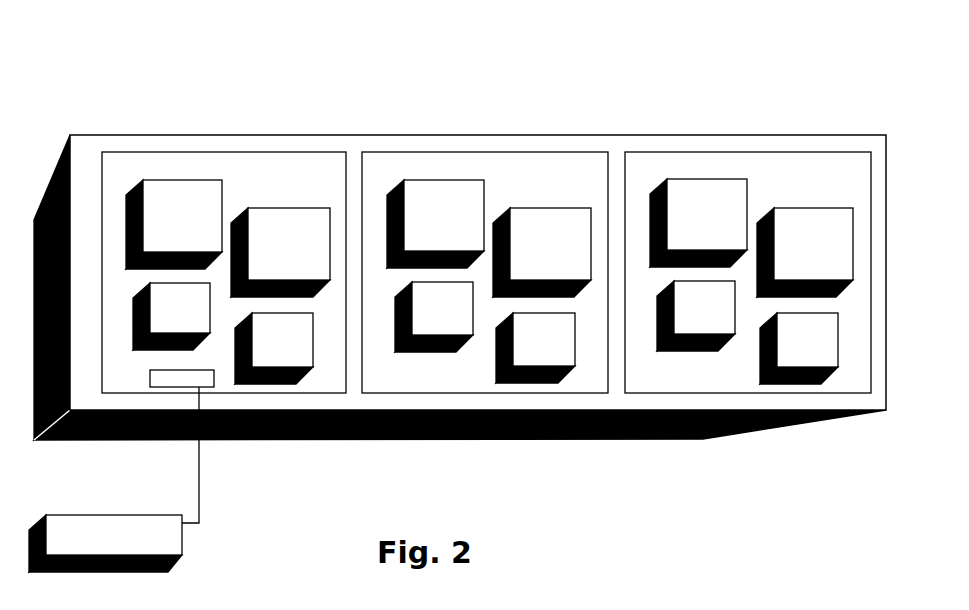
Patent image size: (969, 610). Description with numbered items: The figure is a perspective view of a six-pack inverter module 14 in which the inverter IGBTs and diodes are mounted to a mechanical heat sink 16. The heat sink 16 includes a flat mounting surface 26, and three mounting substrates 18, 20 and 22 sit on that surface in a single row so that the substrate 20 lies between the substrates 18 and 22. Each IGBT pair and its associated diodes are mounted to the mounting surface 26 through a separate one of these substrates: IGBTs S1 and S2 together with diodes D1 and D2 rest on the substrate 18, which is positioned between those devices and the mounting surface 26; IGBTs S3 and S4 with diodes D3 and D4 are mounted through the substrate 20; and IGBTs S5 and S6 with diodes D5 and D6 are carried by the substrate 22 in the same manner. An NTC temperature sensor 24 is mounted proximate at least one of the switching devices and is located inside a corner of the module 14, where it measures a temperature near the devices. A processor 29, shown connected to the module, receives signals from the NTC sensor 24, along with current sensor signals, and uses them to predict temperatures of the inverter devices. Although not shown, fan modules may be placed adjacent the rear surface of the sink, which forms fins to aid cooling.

The six-pack inverter module 14 is at (460, 265).
The mechanical heat sink 16 is at (460, 280).
The mounting substrate 18 is at (248, 176).
The mounting substrate 20 is at (510, 168).
The mounting substrate 22 is at (757, 183).
The NTC temperature sensor 24 is at (214, 378).
The flat mounting surface 26 is at (641, 403).
The processor 29 is at (182, 538).
The IGBT S1 is at (182, 215).
The IGBT S2 is at (290, 248).
The IGBT S3 is at (436, 232).
The IGBT S4 is at (559, 248).
The IGBT S5 is at (723, 216).
The IGBT S6 is at (822, 230).
The diode D1 is at (183, 313).
The diode D2 is at (296, 355).
The diode D3 is at (460, 313).
The diode D4 is at (566, 337).
The diode D5 is at (707, 322).
The diode D6 is at (805, 345).